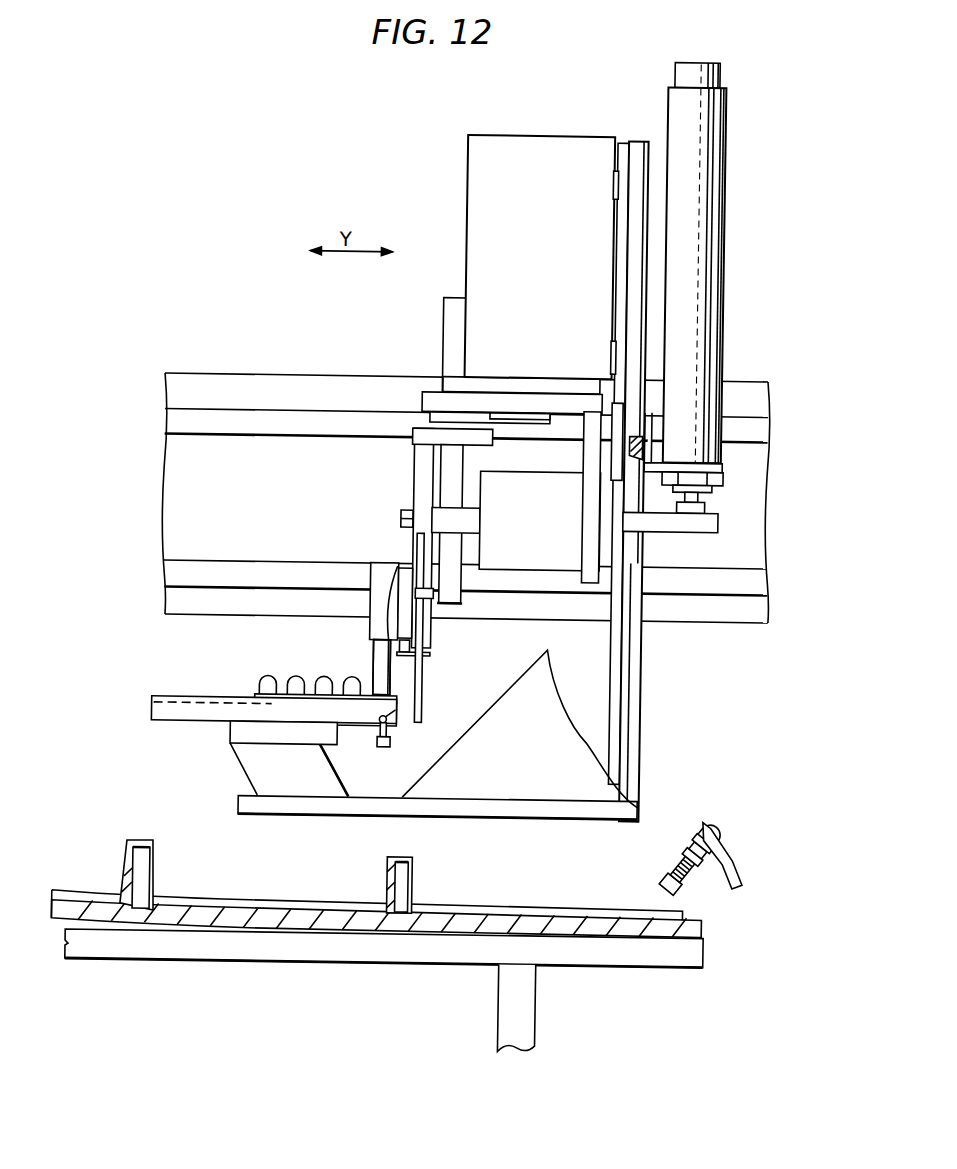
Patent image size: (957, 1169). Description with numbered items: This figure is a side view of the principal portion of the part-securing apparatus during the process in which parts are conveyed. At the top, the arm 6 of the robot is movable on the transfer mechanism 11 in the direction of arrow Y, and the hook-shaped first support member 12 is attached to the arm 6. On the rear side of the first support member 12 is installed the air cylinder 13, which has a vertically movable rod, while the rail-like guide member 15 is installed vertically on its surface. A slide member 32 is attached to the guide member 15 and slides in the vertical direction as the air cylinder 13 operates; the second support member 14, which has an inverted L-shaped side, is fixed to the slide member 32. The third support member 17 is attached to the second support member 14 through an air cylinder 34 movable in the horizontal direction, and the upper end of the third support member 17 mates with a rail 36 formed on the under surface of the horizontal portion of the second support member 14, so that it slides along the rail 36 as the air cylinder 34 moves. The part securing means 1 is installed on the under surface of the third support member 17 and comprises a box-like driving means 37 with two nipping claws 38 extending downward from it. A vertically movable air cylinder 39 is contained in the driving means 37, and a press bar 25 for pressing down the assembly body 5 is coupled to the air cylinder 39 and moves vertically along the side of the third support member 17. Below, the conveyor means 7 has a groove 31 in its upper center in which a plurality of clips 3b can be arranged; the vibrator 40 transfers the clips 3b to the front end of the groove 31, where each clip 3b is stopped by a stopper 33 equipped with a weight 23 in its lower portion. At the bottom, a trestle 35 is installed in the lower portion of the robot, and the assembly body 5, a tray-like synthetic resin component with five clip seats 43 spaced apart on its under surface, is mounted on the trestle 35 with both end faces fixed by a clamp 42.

The part securing means 1 is at (380, 667).
The clips 3b is at (355, 678).
The assembly body 5 is at (703, 919).
The arm 6 is at (462, 266).
The conveyor means 7 is at (220, 710).
The transfer mechanism 11 is at (305, 377).
The first support member 12 is at (637, 728).
The air cylinder 13 is at (723, 195).
The second support member 14 is at (426, 403).
The guide member 15 is at (615, 647).
The third support member 17 is at (414, 474).
The weight 23 is at (388, 748).
The press bar 25 is at (423, 702).
The groove 31 is at (181, 699).
The slide member 32 is at (616, 546).
The stopper 33 is at (399, 727).
The air cylinder 34 is at (525, 563).
The trestle 35 is at (661, 953).
The rail 36 is at (528, 418).
The driving means 37 is at (372, 580).
The nipping claws 38 is at (388, 670).
The air cylinder 39 is at (407, 623).
The vibrator 40 is at (238, 737).
The clamp 42 is at (743, 858).
The clip seats 43 is at (149, 873).